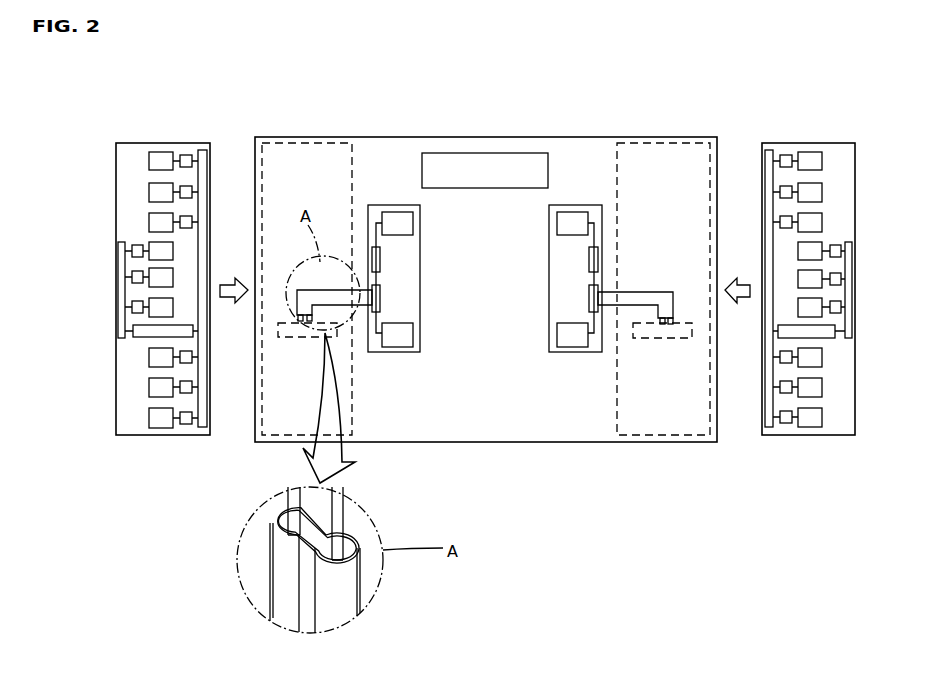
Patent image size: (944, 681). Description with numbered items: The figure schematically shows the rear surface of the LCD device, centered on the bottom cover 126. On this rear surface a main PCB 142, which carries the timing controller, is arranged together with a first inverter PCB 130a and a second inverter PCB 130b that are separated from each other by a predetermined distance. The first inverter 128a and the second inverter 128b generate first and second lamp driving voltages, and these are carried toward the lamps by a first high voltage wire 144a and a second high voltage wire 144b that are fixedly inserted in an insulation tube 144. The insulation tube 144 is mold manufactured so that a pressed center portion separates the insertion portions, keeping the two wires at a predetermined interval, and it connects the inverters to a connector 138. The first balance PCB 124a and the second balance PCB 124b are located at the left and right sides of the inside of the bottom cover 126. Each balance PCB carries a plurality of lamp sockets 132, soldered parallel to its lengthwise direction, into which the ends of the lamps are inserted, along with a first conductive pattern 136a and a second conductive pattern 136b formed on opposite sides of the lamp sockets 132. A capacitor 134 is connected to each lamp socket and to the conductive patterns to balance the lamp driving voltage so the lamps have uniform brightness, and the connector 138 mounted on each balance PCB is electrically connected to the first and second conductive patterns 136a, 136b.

The bottom cover 126 is at (508, 137).
The first balance PCB 124a is at (313, 143).
The second balance PCB 124b is at (665, 143).
The main PCB 142 is at (453, 153).
The first inverter PCB 130a is at (398, 352).
The second inverter PCB 130b is at (572, 352).
The first inverter 128a is at (557, 223).
The second inverter 128b is at (557, 336).
The insulation tube 144 is at (482, 277).
The first high voltage wire 144a is at (356, 279).
The second high voltage wire 144b is at (353, 318).
The lamp sockets 132 is at (152, 158).
The capacitor 134 is at (183, 151).
The first conductive pattern 136a is at (120, 275).
The second conductive pattern 136b is at (200, 150).
The connector 138 is at (137, 338).